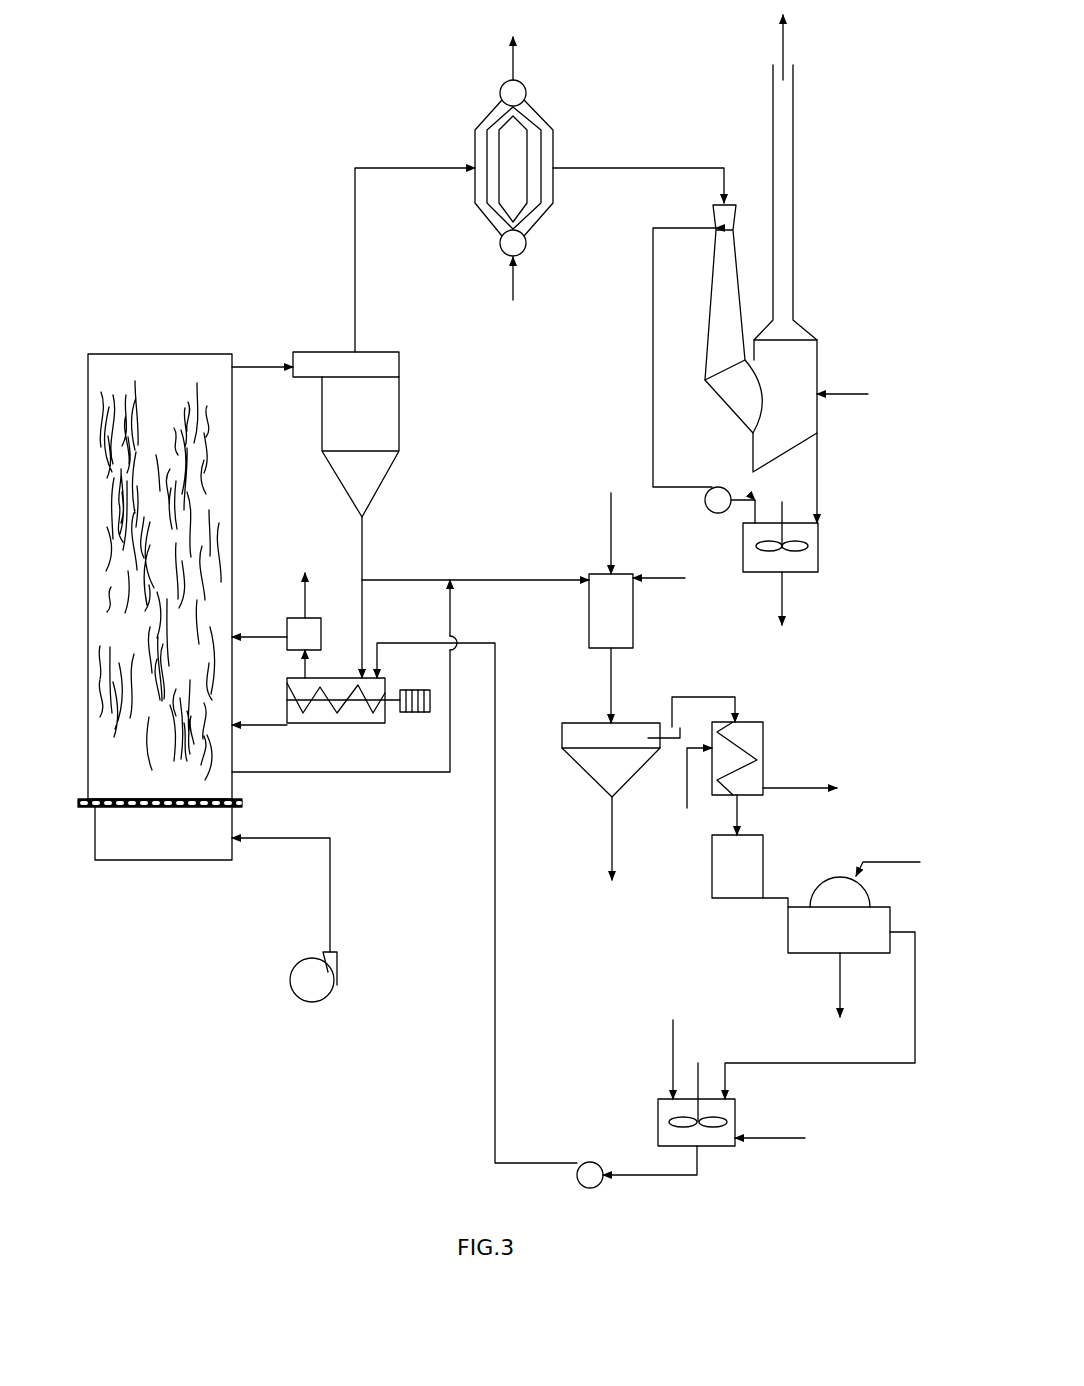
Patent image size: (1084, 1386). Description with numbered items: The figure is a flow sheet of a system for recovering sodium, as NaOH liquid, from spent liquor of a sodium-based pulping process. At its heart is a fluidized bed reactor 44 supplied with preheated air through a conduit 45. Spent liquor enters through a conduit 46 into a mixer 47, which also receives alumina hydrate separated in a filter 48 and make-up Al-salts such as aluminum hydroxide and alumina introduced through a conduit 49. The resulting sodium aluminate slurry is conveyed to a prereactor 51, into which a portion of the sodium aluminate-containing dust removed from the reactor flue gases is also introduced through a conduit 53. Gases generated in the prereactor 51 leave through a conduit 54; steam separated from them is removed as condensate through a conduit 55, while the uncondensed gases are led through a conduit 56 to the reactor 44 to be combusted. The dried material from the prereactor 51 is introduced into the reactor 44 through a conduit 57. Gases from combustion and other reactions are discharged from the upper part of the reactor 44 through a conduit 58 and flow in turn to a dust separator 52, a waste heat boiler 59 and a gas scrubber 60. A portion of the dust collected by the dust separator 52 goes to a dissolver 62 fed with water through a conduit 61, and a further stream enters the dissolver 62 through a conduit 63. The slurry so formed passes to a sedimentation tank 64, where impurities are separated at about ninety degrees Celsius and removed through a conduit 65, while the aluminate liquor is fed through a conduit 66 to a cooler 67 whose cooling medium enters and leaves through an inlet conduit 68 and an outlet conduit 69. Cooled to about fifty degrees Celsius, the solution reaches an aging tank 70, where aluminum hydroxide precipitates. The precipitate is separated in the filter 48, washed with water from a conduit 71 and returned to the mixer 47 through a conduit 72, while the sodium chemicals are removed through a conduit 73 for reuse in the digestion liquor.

The fluidized bed reactor 44 is at (152, 365).
The conduit 45 is at (279, 840).
The conduit 46 is at (673, 1043).
The mixer 47 is at (663, 1136).
The filter 48 is at (800, 935).
The conduit 49 is at (780, 1140).
The prereactor 51 is at (336, 724).
The dust separator 52 is at (348, 365).
The conduit 53 is at (365, 535).
The conduit 54 is at (303, 673).
The conduit 55 is at (310, 601).
The conduit 56 is at (262, 632).
The conduit 57 is at (280, 728).
The conduit 58 is at (258, 365).
The waste heat boiler 59 is at (503, 213).
The gas scrubber 60 is at (812, 360).
The conduit 61 is at (611, 541).
The dissolver 62 is at (622, 628).
The inlet line 63 is at (664, 577).
The sedimentation tank 64 is at (629, 728).
The conduit 65 is at (615, 848).
The conduit 66 is at (716, 697).
The cooler 67 is at (758, 763).
The inlet conduit 68 is at (687, 782).
The outlet conduit 69 is at (793, 790).
The aging tank 70 is at (752, 880).
The conduit 71 is at (890, 862).
The conduit 72 is at (913, 1032).
The conduit 73 is at (840, 990).